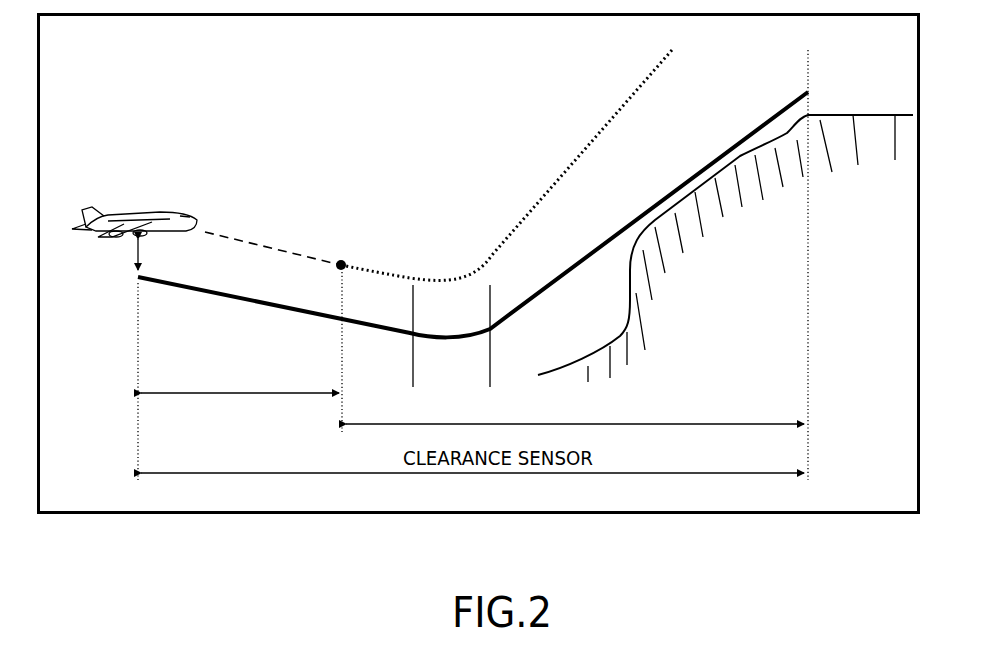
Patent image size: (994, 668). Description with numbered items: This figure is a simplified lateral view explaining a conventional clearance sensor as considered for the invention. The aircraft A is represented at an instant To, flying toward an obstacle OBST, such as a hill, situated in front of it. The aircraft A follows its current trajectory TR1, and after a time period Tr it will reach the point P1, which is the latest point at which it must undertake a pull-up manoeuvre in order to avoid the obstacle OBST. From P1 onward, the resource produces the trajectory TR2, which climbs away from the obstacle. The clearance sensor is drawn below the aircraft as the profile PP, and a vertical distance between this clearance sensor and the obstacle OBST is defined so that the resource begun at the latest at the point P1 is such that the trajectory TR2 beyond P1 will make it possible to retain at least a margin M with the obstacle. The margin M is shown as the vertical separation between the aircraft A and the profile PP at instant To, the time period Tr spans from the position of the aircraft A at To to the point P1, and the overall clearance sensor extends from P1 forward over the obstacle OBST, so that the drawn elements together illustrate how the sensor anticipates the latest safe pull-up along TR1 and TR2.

The aircraft A is at (163, 208).
The margin M is at (150, 252).
The predicted path / protection profile PP is at (653, 210).
The first trajectory TR1 is at (278, 247).
The trajectory TR2 is at (558, 193).
The point P1 is at (342, 252).
The obstacle OBST is at (630, 334).
The time period Tr is at (240, 379).
The instant To is at (458, 491).